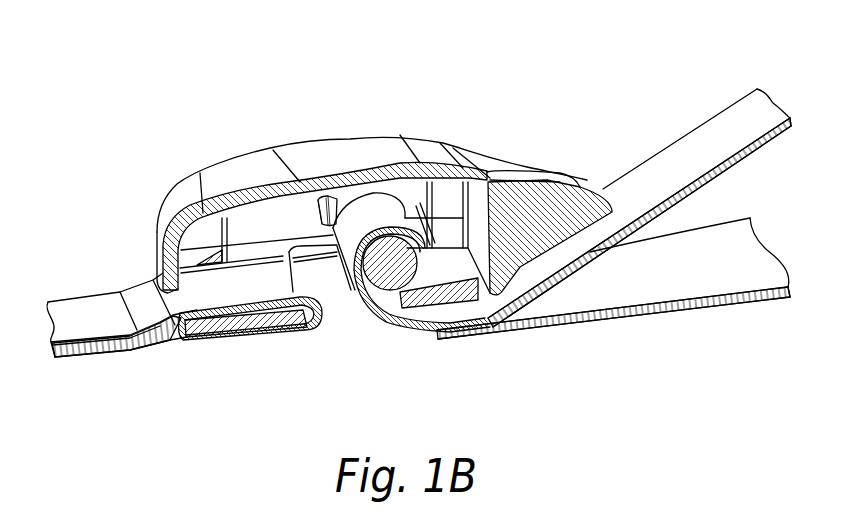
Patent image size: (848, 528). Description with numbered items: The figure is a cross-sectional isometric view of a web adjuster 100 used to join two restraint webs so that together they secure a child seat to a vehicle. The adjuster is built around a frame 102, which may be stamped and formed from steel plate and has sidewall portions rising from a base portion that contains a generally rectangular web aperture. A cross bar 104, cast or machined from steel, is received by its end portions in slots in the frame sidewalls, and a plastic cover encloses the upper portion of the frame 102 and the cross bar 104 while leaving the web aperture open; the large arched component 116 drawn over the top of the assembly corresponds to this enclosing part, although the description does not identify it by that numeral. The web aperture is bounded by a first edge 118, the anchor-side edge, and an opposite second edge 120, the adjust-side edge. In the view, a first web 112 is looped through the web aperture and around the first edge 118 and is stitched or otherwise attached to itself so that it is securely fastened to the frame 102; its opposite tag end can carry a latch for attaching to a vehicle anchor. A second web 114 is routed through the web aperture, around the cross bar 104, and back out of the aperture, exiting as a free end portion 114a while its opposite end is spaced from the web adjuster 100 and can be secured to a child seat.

The web adjuster 100 is at (449, 93).
The frame 102 is at (447, 258).
The cross bar 104 is at (383, 245).
The first web 112 is at (68, 307).
The second web 114 is at (710, 283).
The free end portion 114a is at (712, 128).
The ring housing 116 is at (298, 183).
The first edge 118 is at (320, 317).
The second edge 120 is at (383, 323).